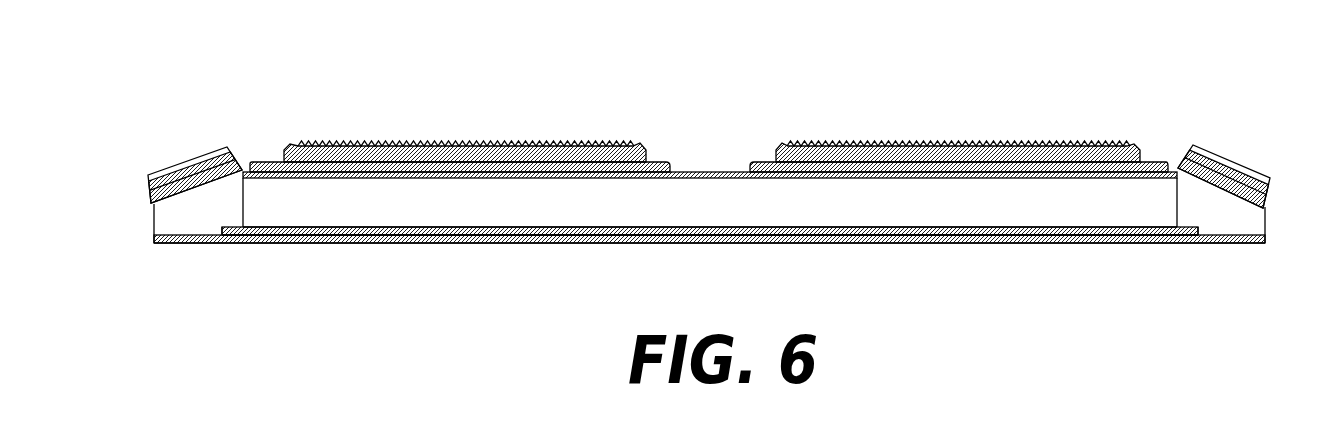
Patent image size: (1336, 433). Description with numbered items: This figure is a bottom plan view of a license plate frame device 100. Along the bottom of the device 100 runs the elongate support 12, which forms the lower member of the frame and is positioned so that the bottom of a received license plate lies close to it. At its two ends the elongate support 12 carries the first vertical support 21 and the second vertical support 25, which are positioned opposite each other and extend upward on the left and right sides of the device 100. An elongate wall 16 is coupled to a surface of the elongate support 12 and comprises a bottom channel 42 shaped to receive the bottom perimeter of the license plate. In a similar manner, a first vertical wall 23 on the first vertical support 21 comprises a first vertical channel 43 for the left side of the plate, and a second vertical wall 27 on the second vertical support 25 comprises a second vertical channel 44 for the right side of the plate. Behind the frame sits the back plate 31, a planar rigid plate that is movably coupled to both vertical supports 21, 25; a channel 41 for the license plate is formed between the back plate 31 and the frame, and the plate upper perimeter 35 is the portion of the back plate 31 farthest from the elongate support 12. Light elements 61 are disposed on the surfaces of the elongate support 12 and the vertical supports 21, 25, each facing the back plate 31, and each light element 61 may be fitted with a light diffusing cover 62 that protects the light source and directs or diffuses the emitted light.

The license plate frame device 100 is at (362, 92).
The elongate support 12 is at (697, 174).
The elongate wall 16 is at (450, 203).
The first vertical support 21 is at (200, 222).
The first vertical wall 23 is at (245, 210).
The second vertical support 25 is at (1220, 222).
The second vertical wall 27 is at (1177, 210).
The back plate 31 is at (987, 245).
The plate upper perimeter 35 is at (843, 245).
The channel 41 is at (608, 228).
The bottom channel 42 is at (655, 230).
The first vertical channel 43 is at (228, 228).
The second vertical channel 44 is at (1193, 230).
The light element 61 is at (212, 145).
The light diffusing cover 62 is at (185, 164).